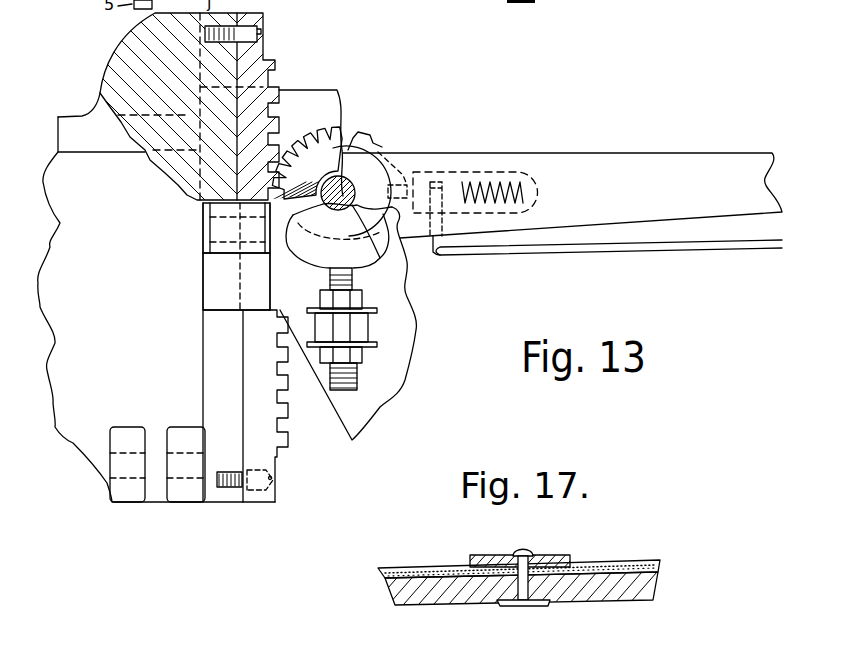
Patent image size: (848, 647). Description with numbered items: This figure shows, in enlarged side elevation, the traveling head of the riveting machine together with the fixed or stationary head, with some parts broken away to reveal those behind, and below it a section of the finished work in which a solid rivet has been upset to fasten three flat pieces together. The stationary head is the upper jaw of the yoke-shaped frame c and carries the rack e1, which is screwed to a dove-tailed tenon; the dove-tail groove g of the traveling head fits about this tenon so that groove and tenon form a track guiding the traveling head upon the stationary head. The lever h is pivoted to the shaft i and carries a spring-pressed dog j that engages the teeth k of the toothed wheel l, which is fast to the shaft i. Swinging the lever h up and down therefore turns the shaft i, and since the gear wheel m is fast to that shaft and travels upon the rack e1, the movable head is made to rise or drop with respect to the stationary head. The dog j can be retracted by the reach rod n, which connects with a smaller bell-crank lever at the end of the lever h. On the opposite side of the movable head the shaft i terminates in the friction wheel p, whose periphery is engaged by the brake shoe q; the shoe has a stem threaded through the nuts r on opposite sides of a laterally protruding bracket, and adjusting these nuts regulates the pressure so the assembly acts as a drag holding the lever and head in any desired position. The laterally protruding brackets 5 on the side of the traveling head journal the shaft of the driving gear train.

The yoke-shaped frame c is at (203, 200).
The rack e1 is at (279, 80).
The laterally protruding brackets 5 is at (213, 250).
The dove-tail groove g is at (236, 281).
The gear wheel m is at (315, 130).
The friction wheel p is at (335, 202).
The toothed wheel l is at (343, 152).
The teeth k is at (374, 138).
The lever h is at (562, 195).
The spring-pressed dog j is at (398, 185).
The reach rod n is at (548, 257).
The brake shoe q is at (370, 263).
The shaft i is at (412, 275).
The nuts r is at (320, 302).